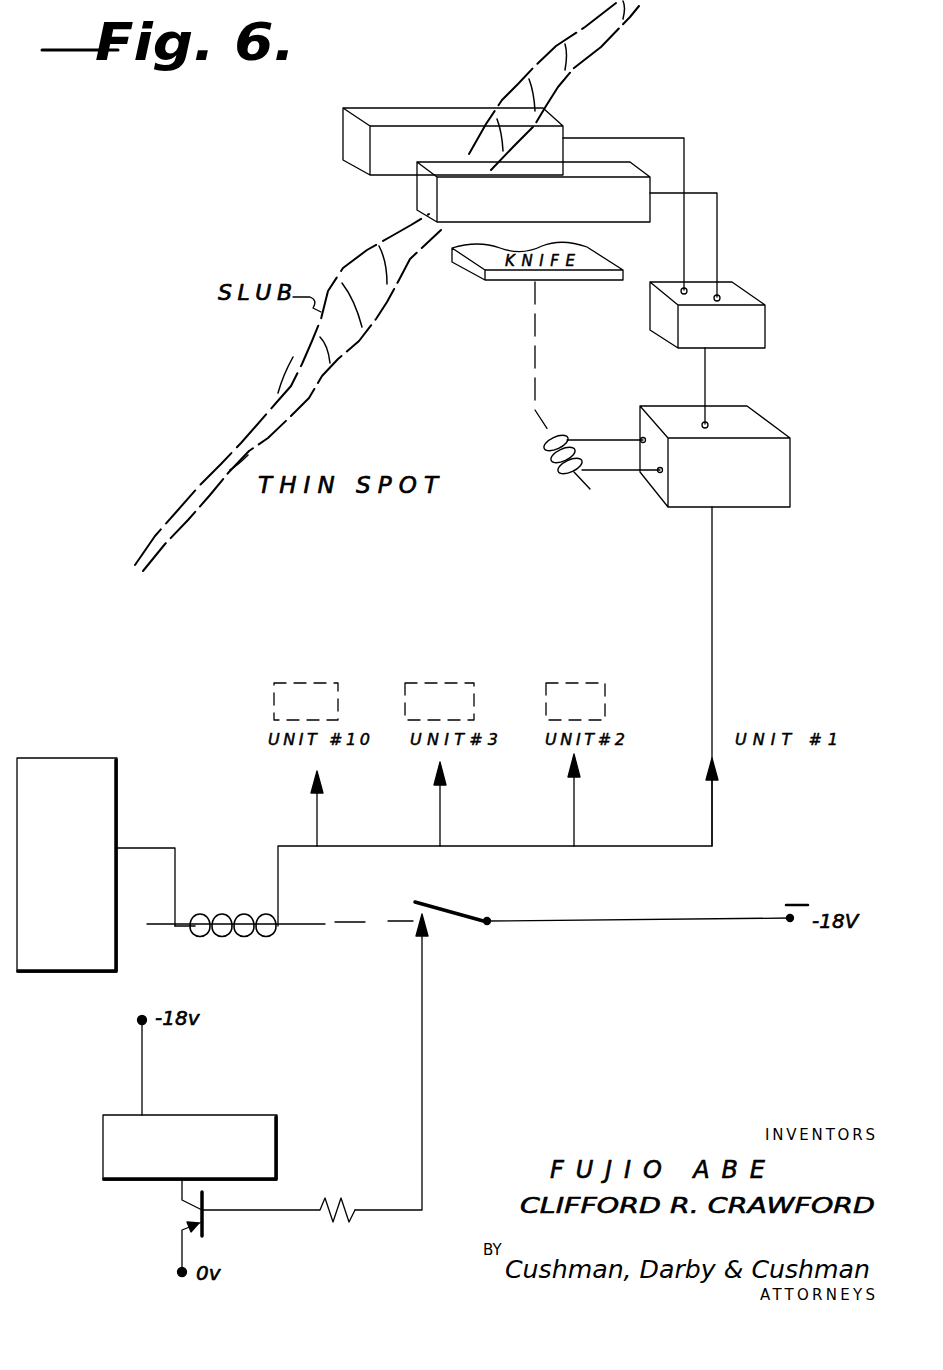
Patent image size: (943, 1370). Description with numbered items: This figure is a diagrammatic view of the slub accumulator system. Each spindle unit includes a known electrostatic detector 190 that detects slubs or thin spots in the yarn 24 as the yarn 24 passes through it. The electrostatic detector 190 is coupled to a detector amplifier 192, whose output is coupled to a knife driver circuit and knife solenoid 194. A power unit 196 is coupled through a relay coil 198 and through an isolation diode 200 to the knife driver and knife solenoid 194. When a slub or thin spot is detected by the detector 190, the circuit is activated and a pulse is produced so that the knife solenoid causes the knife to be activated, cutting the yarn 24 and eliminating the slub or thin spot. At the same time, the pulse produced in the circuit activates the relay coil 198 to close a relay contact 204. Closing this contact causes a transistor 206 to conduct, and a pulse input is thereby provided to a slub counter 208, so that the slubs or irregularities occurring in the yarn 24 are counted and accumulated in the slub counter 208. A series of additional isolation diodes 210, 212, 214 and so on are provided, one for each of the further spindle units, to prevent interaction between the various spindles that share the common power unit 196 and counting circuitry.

The yarn 24 is at (300, 393).
The electrostatic detector 190 is at (441, 90).
The detector amplifier 192 is at (656, 310).
The knife driver circuit and knife solenoid 194 is at (668, 497).
The power unit 196 is at (113, 762).
The relay coil 198 is at (200, 920).
The isolation diode 200 is at (709, 771).
The relay contact 204 is at (470, 917).
The transistor 206 is at (205, 1228).
The slub counter 208 is at (124, 1097).
The isolation diode 210 is at (570, 770).
The isolation diode 212 is at (434, 775).
The isolation diode 214 is at (312, 782).